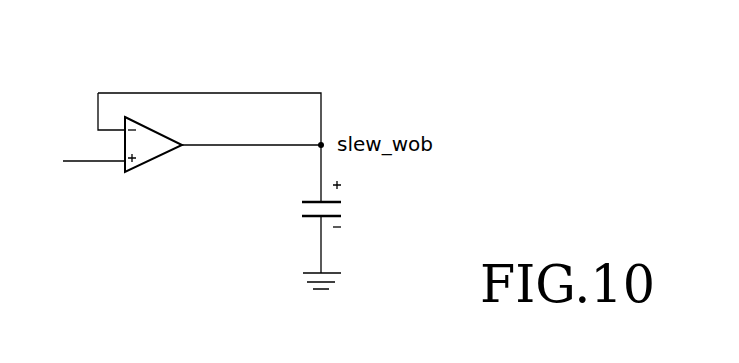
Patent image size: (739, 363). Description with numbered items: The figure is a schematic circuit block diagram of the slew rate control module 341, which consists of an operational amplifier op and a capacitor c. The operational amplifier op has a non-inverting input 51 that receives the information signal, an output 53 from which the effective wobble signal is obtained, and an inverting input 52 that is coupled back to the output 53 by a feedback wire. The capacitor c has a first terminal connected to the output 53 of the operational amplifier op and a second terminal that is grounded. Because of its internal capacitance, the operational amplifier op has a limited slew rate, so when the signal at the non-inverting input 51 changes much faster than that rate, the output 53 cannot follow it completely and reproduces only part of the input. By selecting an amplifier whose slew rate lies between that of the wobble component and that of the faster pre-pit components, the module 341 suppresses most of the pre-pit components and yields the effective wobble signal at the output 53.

The slew rate control module 341 is at (260, 85).
The non-inverting input 51 is at (90, 161).
The inverting input 52 is at (108, 130).
The output 53 is at (252, 145).
The operational amplifier op is at (150, 160).
The capacitor c is at (330, 217).